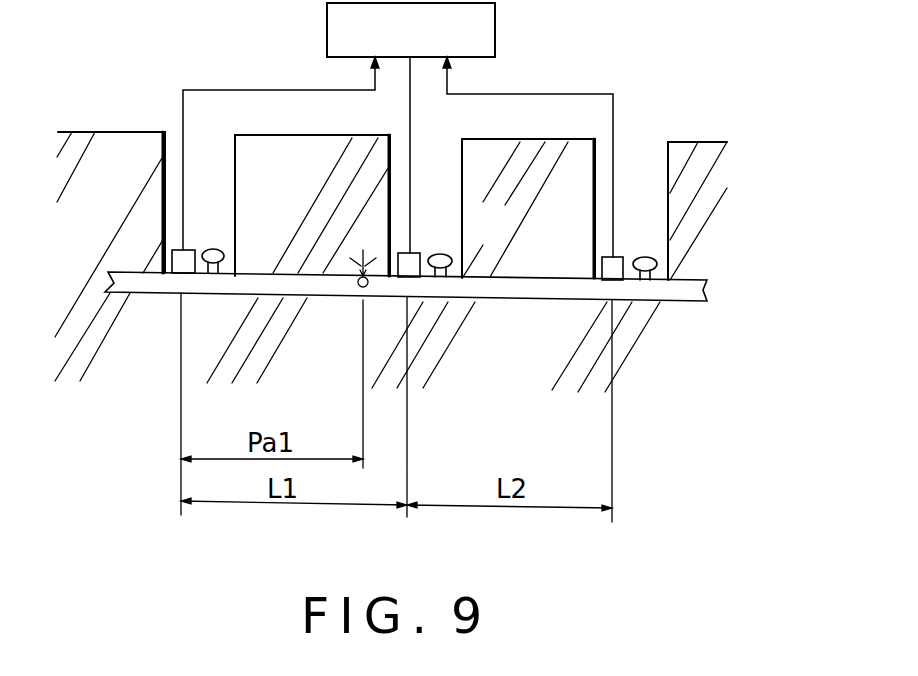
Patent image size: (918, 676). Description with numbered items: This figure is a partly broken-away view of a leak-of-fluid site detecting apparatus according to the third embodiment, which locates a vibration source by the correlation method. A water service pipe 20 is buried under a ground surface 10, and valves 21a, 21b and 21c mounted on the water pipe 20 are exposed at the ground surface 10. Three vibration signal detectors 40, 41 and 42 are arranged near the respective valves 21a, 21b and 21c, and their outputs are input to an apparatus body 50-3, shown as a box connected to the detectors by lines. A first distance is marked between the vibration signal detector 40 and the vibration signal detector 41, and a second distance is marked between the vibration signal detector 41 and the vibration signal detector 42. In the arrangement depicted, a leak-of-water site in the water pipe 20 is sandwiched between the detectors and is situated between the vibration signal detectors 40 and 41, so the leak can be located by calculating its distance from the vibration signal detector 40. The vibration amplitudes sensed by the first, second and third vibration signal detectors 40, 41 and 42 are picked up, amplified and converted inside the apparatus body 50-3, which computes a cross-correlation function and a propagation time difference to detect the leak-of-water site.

The ground surface 10 is at (687, 141).
The water service pipe 20 is at (697, 280).
The valve 21a is at (225, 254).
The valve 21b is at (453, 258).
The valve 21c is at (646, 258).
The vibration signal detector 40 is at (186, 250).
The vibration signal detector 41 is at (410, 252).
The vibration signal detector 42 is at (608, 257).
The apparatus body 50-3 is at (495, 30).